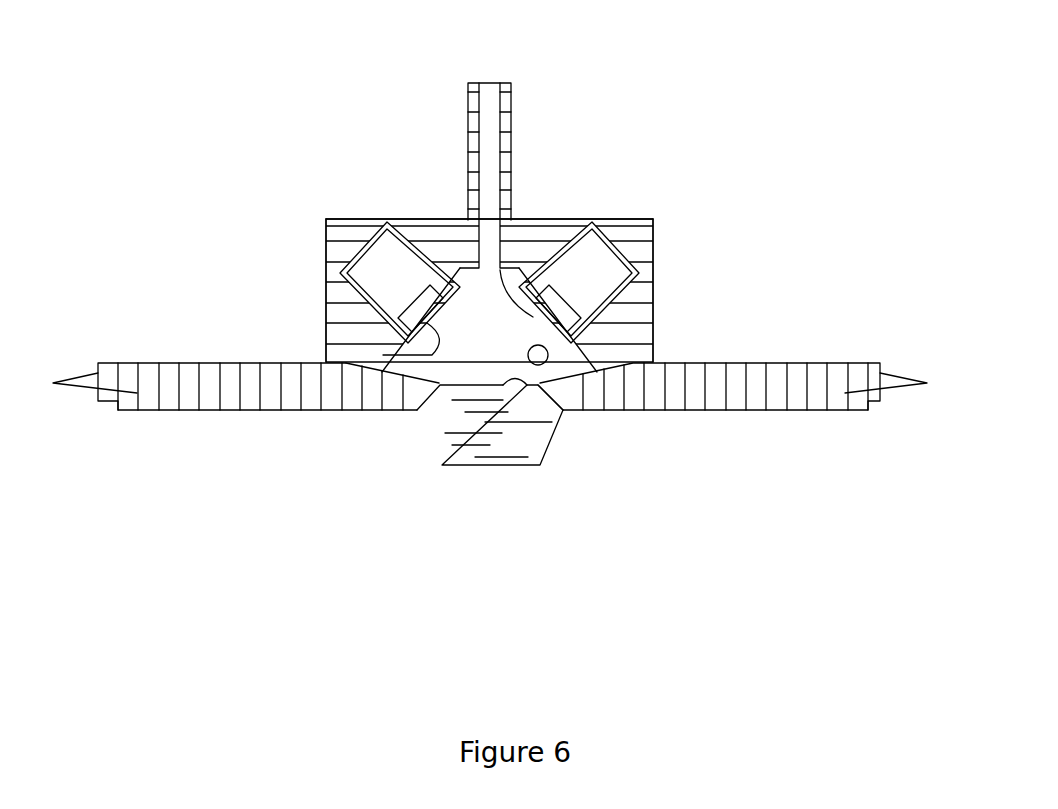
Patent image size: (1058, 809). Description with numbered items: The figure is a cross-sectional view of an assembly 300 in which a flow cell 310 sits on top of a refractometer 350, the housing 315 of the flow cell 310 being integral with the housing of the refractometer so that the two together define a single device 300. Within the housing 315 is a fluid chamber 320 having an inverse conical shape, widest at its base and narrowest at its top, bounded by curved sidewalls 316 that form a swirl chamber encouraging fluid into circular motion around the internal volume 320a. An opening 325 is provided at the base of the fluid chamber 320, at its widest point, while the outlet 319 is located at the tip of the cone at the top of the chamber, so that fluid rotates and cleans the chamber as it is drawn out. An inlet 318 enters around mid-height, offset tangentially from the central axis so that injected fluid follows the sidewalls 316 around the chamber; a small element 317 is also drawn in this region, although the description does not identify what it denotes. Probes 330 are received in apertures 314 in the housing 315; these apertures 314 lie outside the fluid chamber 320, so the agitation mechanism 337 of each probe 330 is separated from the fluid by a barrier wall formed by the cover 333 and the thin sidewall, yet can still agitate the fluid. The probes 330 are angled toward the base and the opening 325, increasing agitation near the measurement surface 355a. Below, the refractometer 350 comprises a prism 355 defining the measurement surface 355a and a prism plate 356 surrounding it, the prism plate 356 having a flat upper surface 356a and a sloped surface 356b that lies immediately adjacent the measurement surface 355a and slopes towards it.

The assembly 300 is at (595, 208).
The flow cell 310 is at (653, 330).
The apertures 314 is at (653, 293).
The housing 315 is at (430, 232).
The sidewalls 316 is at (472, 290).
The pivot pin 317 is at (549, 357).
The inlet 318 is at (577, 375).
The outlet 319 is at (475, 105).
The fluid chamber 320 is at (437, 445).
The internal volume 320a is at (458, 345).
The opening 325 is at (473, 400).
The probes 330 is at (400, 263).
The cover 333 is at (383, 360).
The agitation mechanism 337 is at (415, 310).
The refractometer 350 is at (785, 429).
The prism 355 is at (522, 432).
The measurement surface 355a is at (535, 387).
The prism plate 356 is at (775, 387).
The flat upper surface 356a is at (232, 362).
The sloped surface 356b is at (405, 372).